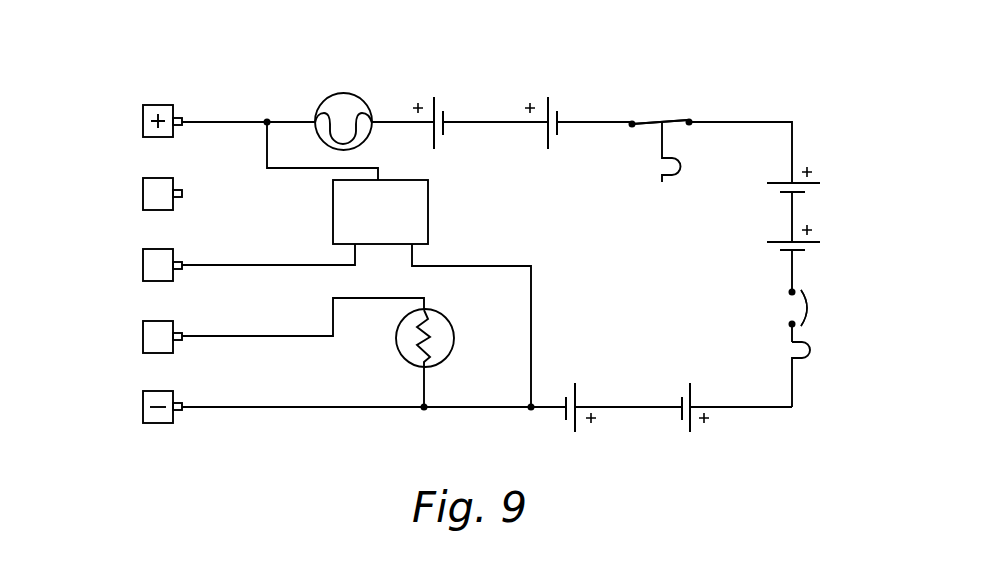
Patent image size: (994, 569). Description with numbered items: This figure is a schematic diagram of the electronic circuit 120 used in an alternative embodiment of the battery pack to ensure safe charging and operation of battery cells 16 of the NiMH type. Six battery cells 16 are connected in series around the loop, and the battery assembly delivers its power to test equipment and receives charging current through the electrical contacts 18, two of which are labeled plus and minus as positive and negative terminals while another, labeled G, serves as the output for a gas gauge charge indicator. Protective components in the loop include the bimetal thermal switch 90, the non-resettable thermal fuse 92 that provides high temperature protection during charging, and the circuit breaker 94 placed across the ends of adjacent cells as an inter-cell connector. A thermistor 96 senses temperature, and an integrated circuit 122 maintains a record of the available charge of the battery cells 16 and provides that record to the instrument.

The battery cells 16 is at (438, 106).
The electrical contacts 18 is at (145, 252).
The bimetal thermal switch 90 is at (692, 113).
The non-resettable thermal fuse 92 is at (326, 97).
The circuit breaker 94 is at (808, 360).
The thermistor 96 is at (413, 366).
The electronic circuit 120 is at (787, 437).
The integrated circuit 122 is at (428, 222).